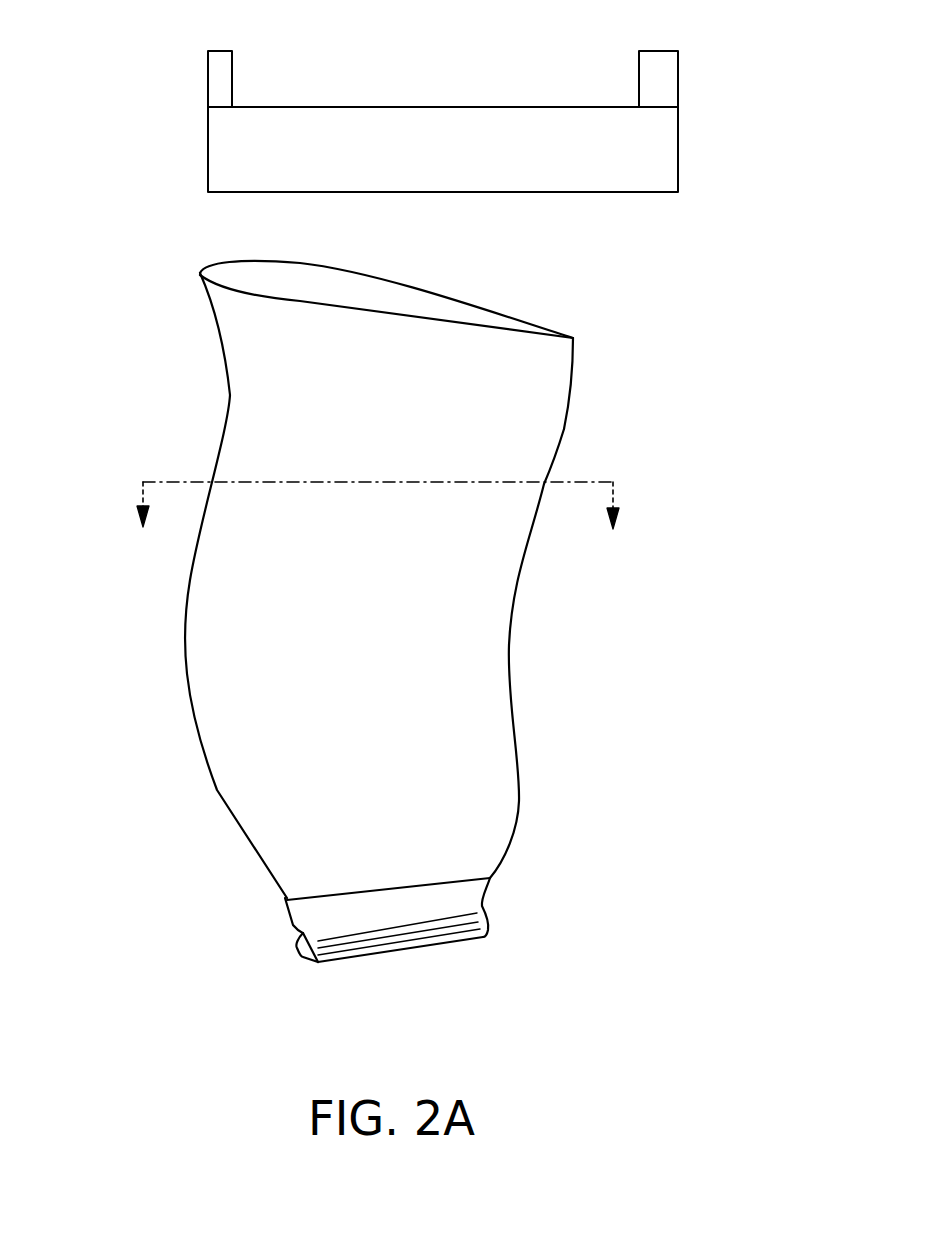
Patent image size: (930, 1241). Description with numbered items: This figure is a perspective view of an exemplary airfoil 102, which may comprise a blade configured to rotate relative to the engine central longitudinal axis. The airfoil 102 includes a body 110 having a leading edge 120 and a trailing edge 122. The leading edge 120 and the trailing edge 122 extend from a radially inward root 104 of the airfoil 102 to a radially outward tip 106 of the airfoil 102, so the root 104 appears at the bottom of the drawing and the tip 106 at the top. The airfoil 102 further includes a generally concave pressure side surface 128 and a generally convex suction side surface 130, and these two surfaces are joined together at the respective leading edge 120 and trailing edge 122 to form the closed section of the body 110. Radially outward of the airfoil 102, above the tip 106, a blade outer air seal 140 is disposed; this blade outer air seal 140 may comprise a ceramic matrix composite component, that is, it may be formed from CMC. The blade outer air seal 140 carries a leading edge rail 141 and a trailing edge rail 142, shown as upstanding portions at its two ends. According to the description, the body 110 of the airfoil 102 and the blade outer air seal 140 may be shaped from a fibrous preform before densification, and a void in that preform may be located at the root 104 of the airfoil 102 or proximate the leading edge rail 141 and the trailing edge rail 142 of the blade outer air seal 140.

The airfoil 102 is at (166, 214).
The root 104 is at (420, 937).
The tip 106 is at (302, 285).
The body 110 is at (472, 662).
The leading edge 120 is at (200, 272).
The trailing edge 122 is at (573, 347).
The pressure side surface 128 is at (393, 535).
The suction side surface 130 is at (483, 303).
The blade outer air seal 140 is at (466, 161).
The leading edge rail 141 is at (218, 98).
The trailing edge rail 142 is at (668, 95).